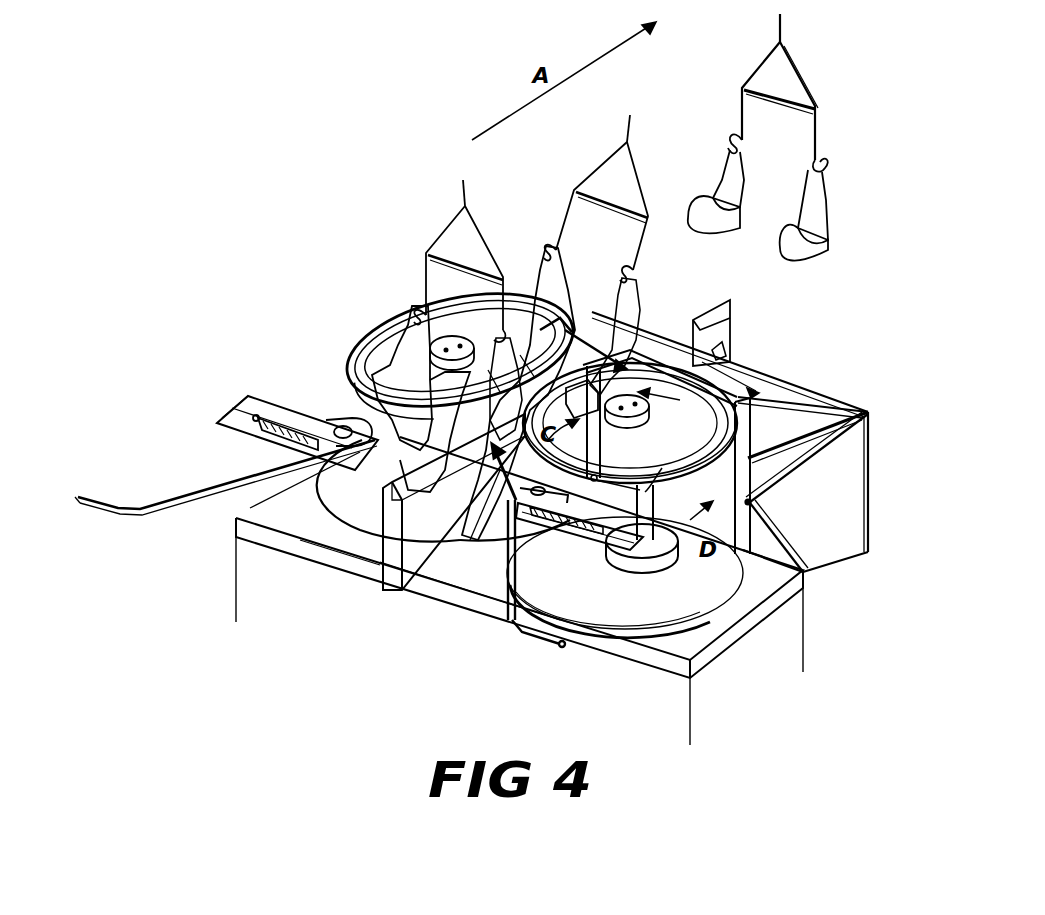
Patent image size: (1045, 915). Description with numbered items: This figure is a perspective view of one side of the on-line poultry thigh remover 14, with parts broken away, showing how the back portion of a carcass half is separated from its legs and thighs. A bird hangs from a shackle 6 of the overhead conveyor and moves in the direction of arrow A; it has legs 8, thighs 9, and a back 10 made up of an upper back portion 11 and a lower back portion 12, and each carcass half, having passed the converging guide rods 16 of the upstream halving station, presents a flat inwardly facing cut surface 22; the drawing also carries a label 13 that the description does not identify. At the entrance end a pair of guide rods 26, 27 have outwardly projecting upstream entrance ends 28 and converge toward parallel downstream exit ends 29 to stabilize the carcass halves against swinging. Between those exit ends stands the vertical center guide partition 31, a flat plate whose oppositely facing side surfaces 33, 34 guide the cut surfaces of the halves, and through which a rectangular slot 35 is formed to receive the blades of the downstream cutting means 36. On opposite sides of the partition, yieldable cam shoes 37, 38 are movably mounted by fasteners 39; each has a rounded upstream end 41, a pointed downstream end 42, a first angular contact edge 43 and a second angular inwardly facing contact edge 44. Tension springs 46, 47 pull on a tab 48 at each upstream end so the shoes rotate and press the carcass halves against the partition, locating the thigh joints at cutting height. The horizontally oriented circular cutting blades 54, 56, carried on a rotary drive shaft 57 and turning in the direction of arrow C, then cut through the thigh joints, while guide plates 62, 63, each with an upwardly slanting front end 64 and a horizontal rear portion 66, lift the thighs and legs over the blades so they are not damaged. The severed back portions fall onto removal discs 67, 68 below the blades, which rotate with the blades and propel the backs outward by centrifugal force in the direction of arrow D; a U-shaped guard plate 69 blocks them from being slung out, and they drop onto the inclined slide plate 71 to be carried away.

The shackle 6 is at (803, 69).
The legs 8 is at (745, 174).
The thighs 9 is at (688, 218).
The back 10 is at (735, 337).
The upper back portion 11 is at (728, 356).
The lower back portion 12 is at (705, 315).
The bracket 13 is at (498, 380).
The on-line poultry thigh remover 14 is at (376, 693).
The guide rods 16 is at (498, 484).
The cut surface 22 is at (411, 340).
The guide rod 26 is at (505, 582).
The guide rod 27 is at (188, 506).
The upstream entrance ends 28 is at (80, 498).
The downstream exit ends 29 is at (340, 455).
The vertical center guide partition 31 is at (406, 593).
The side surface 33 is at (465, 515).
The side surface 34 is at (372, 578).
The rectangular slot 35 is at (572, 386).
The cutting means 36 is at (755, 400).
The yieldable cam shoe 37 is at (488, 452).
The yieldable cam shoe 38 is at (355, 408).
The fasteners 39 is at (300, 392).
The rounded upstream end 41 is at (318, 444).
The pointed downstream end 42 is at (510, 445).
The first angular contact edge 43 is at (498, 476).
The second angular inwardly facing contact edge 44 is at (412, 452).
The tension spring 46 is at (590, 532).
The tension spring 47 is at (262, 430).
The tab 48 is at (345, 456).
The circular cutting blade 54 is at (702, 446).
The circular cutting blade 56 is at (378, 352).
The rotary drive shaft 57 is at (655, 485).
The guide plate 62 is at (645, 352).
The guide plate 63 is at (620, 355).
The upwardly slanting front end 64 is at (596, 436).
The horizontal rear portion 66 is at (555, 305).
The removal disc 67 is at (372, 518).
The removal disc 68 is at (658, 604).
The U-shaped guard plate 69 is at (818, 390).
The slide plate 71 is at (822, 432).